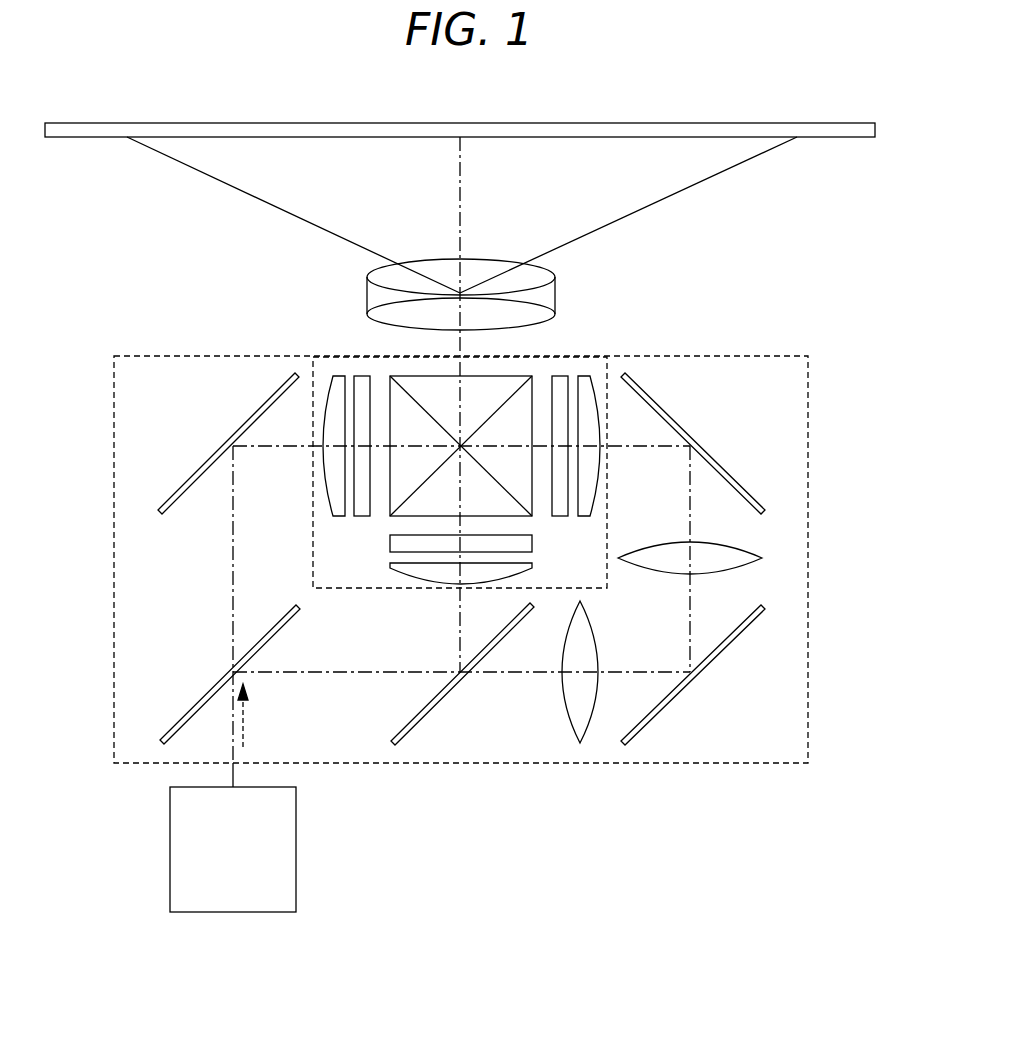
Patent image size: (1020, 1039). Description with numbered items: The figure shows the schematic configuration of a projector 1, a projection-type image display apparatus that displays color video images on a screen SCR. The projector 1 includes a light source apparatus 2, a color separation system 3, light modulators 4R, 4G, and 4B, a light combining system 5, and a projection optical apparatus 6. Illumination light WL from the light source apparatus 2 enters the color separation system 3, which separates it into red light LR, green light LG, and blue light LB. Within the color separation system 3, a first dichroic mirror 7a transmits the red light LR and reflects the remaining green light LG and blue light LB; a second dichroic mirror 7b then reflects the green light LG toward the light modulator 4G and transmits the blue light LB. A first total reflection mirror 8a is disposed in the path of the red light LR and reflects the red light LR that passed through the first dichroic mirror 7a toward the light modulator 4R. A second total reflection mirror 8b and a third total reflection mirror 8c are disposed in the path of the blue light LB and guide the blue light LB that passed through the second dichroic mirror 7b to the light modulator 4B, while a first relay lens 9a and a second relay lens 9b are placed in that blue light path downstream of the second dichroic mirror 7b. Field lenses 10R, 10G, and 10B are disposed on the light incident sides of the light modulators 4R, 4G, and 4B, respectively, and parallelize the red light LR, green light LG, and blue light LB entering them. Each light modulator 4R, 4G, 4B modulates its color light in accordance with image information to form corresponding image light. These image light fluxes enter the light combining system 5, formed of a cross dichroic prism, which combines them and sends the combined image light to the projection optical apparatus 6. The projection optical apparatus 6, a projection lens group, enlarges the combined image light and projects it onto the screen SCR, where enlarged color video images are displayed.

The projector 1 is at (813, 335).
The light source apparatus 2 is at (297, 845).
The color separation system 3 is at (114, 502).
The light modulator 4R is at (362, 375).
The light modulator 4G is at (390, 545).
The light modulator 4B is at (560, 375).
The light combining system 5 is at (484, 385).
The projection optical apparatus 6 is at (440, 272).
The first dichroic mirror 7a is at (195, 702).
The second dichroic mirror 7b is at (436, 704).
The first total reflection mirror 8a is at (205, 460).
The second total reflection mirror 8b is at (716, 659).
The third total reflection mirror 8c is at (720, 462).
The first relay lens 9a is at (566, 690).
The second relay lens 9b is at (750, 550).
The field lens 10R is at (336, 375).
The field lens 10G is at (392, 566).
The field lens 10B is at (588, 375).
The screen SCR is at (841, 138).
The illumination light WL is at (250, 725).
The red light LR is at (233, 580).
The green light LG is at (460, 627).
The blue light LB is at (690, 627).